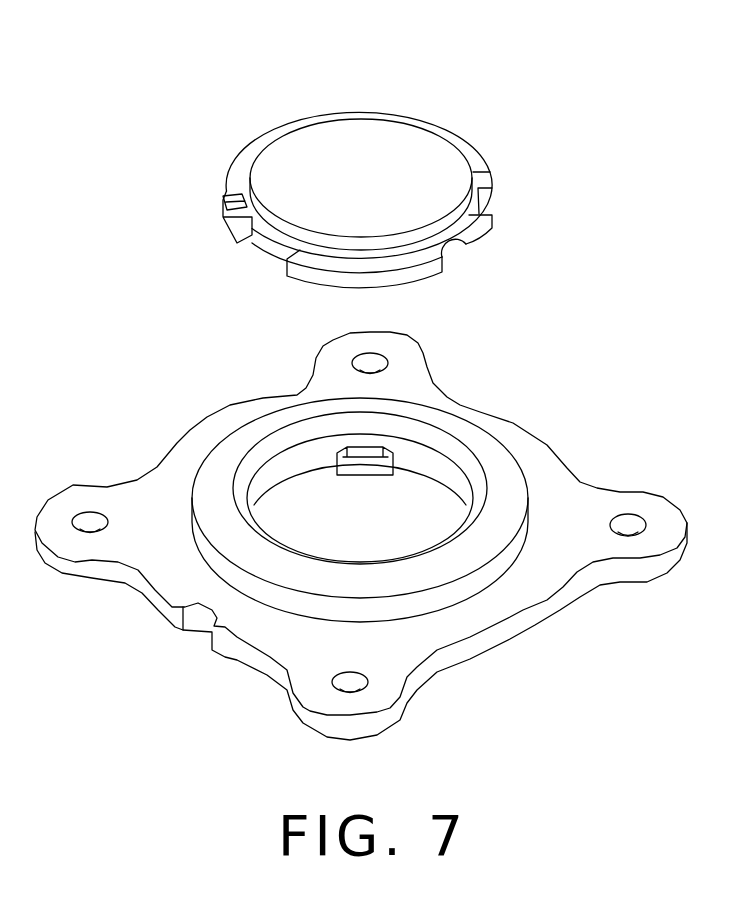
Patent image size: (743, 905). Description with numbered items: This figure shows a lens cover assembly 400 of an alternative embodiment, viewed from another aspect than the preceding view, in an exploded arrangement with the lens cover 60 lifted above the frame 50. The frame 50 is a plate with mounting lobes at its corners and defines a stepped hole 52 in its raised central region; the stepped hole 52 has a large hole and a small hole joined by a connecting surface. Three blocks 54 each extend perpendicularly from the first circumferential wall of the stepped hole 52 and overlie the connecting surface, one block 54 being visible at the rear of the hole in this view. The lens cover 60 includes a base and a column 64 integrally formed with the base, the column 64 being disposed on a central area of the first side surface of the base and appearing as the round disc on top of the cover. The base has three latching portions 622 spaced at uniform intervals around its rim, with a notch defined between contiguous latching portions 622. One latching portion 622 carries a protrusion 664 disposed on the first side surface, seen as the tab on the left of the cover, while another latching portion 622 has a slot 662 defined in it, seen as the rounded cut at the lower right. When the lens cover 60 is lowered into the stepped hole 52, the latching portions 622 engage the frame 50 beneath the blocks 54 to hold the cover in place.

The lens cover assembly 400 is at (370, 44).
The frame 50 is at (550, 430).
The stepped hole 52 is at (315, 520).
The block 54 is at (345, 440).
The lens cover 60 is at (520, 205).
The column 64 is at (397, 152).
The latching portion 622 is at (475, 152).
The slot 662 is at (455, 252).
The protrusion 664 is at (223, 190).